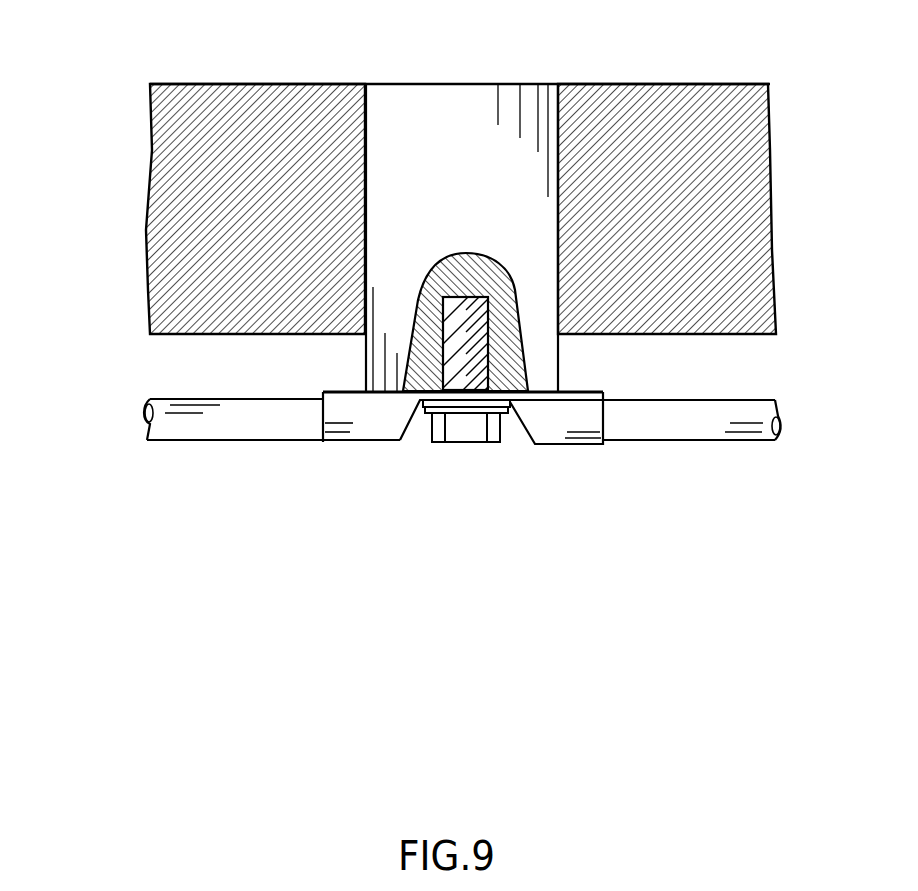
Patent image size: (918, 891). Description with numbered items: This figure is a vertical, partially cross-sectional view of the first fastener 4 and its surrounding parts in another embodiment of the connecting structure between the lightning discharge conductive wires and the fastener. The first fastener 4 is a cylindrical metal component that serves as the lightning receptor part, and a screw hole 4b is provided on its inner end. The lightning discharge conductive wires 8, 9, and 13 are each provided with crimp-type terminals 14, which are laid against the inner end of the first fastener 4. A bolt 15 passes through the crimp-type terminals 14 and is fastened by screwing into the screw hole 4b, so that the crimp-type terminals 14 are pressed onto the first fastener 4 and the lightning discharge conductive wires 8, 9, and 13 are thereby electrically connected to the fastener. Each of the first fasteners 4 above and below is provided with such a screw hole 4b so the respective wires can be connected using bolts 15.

The first fastener 4 is at (465, 100).
The screw hole 4b is at (437, 338).
The lightning discharge conductive wire 8 is at (458, 471).
The lightning discharge conductive wire 9 is at (458, 471).
The lightning discharge conductive wire 13 is at (282, 417).
The crimp-type terminal 14 is at (363, 425).
The bolt 15 is at (460, 425).